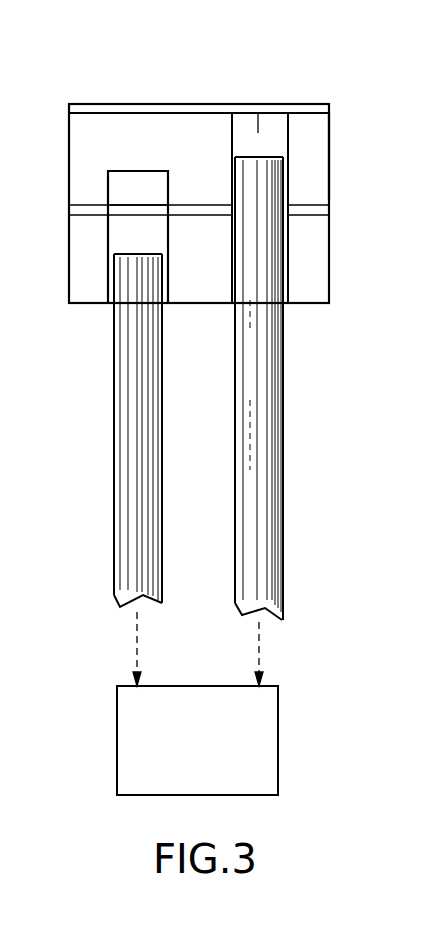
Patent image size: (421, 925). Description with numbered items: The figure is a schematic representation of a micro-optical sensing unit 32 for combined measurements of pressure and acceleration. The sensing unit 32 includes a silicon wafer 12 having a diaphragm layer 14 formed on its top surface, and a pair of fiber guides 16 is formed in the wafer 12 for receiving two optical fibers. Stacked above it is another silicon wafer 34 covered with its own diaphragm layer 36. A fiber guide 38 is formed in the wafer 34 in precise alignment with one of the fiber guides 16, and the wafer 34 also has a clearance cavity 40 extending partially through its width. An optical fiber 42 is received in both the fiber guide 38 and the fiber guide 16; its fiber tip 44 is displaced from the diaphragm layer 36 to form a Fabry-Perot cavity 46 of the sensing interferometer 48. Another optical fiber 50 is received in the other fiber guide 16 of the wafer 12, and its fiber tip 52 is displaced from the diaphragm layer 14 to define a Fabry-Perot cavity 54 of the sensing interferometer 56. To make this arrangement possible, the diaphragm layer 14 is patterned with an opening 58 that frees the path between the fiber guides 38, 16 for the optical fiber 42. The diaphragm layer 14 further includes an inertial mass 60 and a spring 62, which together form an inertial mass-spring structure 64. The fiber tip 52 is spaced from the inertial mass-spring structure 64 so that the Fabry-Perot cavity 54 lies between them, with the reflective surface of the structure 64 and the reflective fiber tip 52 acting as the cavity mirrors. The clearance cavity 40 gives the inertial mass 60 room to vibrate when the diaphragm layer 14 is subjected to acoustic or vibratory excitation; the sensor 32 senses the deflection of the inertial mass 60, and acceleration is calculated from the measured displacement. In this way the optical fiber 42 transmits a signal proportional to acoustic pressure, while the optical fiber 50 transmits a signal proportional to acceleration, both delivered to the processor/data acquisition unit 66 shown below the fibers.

The silicon wafer 12 is at (318, 265).
The diaphragm layer 14 is at (318, 211).
The fiber guides 16 is at (286, 303).
The sensing unit 32 is at (328, 82).
The silicon wafer 34 is at (320, 143).
The diaphragm layer 36 is at (323, 108).
The fiber guide 38 is at (233, 155).
The clearance cavity 40 is at (120, 190).
The optical fiber 42 is at (285, 468).
The fiber tip 44 is at (268, 155).
The Fabry-Perot cavity 46 is at (258, 133).
The sensing interferometer 48 is at (222, 122).
The optical fiber 50 is at (114, 498).
The fiber tip 52 is at (145, 254).
The Fabry-Perot cavity 54 is at (157, 190).
The sensing interferometer 56 is at (92, 228).
The opening 58 is at (288, 207).
The inertial mass 60 is at (137, 212).
The spring 62 is at (112, 207).
The inertial mass-spring structure 64 is at (152, 237).
The processor/data acquisition unit 66 is at (117, 738).